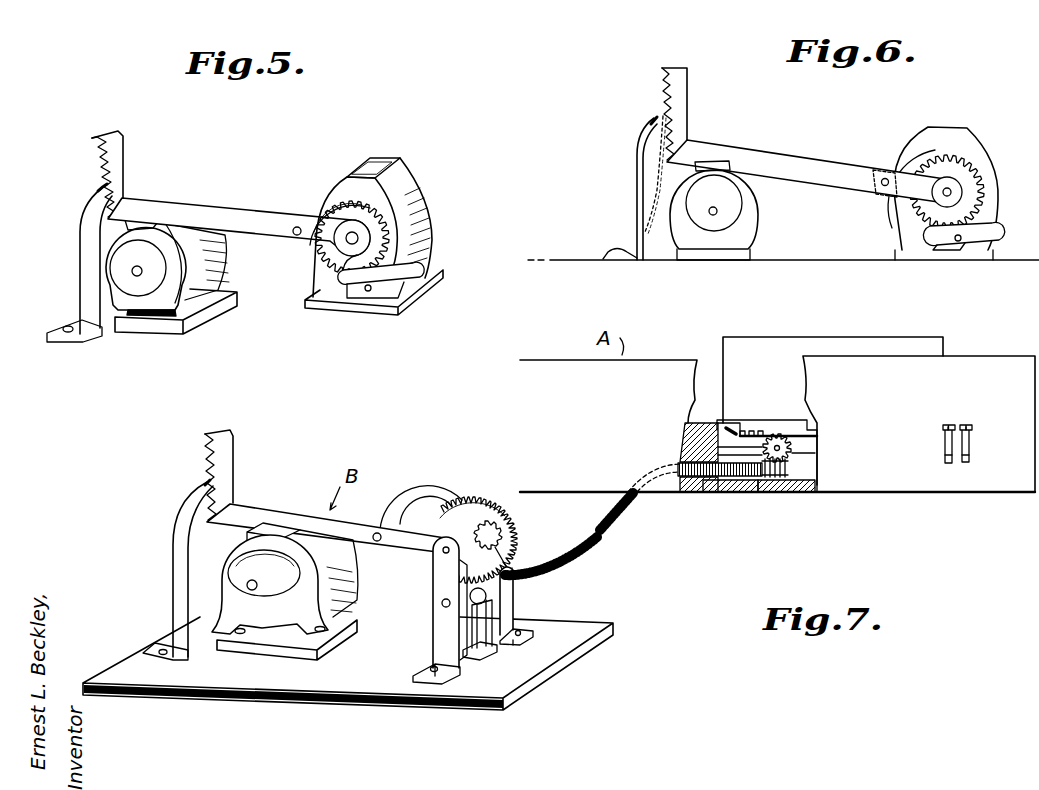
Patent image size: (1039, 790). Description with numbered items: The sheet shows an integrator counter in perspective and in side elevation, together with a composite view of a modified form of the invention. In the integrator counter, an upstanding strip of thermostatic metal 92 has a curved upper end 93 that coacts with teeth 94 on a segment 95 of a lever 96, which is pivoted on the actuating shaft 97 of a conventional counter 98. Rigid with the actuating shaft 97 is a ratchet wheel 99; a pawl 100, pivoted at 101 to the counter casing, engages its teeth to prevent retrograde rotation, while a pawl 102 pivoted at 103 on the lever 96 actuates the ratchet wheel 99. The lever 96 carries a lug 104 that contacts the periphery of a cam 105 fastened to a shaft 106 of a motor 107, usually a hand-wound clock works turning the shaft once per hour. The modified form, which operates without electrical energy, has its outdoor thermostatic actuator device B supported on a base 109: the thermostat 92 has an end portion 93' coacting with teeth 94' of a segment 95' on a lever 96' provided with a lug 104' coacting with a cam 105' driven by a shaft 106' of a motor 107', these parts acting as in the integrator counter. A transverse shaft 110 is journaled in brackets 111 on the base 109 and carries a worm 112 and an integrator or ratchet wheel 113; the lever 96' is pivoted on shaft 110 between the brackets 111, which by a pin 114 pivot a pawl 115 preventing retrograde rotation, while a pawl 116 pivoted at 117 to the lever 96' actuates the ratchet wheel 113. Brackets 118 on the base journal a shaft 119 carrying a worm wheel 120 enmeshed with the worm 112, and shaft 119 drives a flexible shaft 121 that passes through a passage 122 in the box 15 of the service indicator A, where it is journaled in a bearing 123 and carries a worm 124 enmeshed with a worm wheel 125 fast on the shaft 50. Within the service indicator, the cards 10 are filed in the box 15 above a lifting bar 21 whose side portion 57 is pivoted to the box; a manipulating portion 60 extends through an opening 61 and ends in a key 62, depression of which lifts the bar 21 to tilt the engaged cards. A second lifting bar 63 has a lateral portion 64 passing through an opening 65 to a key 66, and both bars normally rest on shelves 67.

In FIG. 5, the strip of thermostatic metal 92 is at (78, 257).
In FIG. 6, the strip of thermostatic metal 92 is at (635, 180).
In FIG. 7, the strip of thermostatic metal 92 is at (173, 538).
In FIG. 5, the curved upper end 93 is at (74, 188).
In FIG. 6, the curved upper end 93 is at (625, 118).
In FIG. 5, the teeth 94 is at (81, 177).
In FIG. 6, the teeth 94 is at (641, 114).
In FIG. 5, the segment 95 is at (129, 164).
In FIG. 6, the segment 95 is at (697, 104).
In FIG. 5, the lever 96 is at (239, 217).
In FIG. 6, the lever 96 is at (806, 164).
In FIG. 5, the actuating shaft 97 is at (348, 242).
In FIG. 6, the actuating shaft 97 is at (960, 190).
In FIG. 5, the counter 98 is at (396, 182).
In FIG. 6, the counter 98 is at (965, 140).
In FIG. 5, the ratchet wheel 99 is at (376, 245).
In FIG. 6, the ratchet wheel 99 is at (985, 208).
In FIG. 5, the pawl 100 is at (350, 284).
In FIG. 6, the pawl 100 is at (940, 246).
In FIG. 5, the pivot 101 is at (368, 292).
In FIG. 6, the pivot 101 is at (960, 243).
In FIG. 5, the pawl 102 is at (318, 210).
In FIG. 6, the pawl 102 is at (899, 160).
In FIG. 5, the pivot 103 is at (294, 235).
In FIG. 6, the pivot 103 is at (882, 186).
In FIG. 5, the lug 104 is at (159, 198).
In FIG. 6, the lug 104 is at (726, 144).
In FIG. 5, the cam 105 is at (98, 268).
In FIG. 6, the cam 105 is at (663, 203).
In FIG. 5, the shaft 106 is at (85, 290).
In FIG. 6, the shaft 106 is at (759, 205).
In FIG. 5, the motor 107 is at (171, 292).
In FIG. 6, the motor 107 is at (737, 215).
In FIG. 7, the cards 10 is at (903, 335).
In FIG. 7, the box 15 is at (980, 363).
In FIG. 7, the lifting bar 21 is at (738, 419).
In FIG. 7, the shaft 50 is at (792, 448).
In FIG. 7, the side portion 57 is at (772, 434).
In FIG. 7, the manipulating portion 60 is at (943, 435).
In FIG. 7, the opening 61 is at (942, 456).
In FIG. 7, the key 62 is at (948, 423).
In FIG. 7, the lifting bar 63 is at (748, 431).
In FIG. 7, the lateral portion 64 is at (973, 433).
In FIG. 7, the opening 65 is at (972, 456).
In FIG. 7, the key 66 is at (968, 424).
In FIG. 7, the shelves 67 is at (675, 456).
In FIG. 7, the flexible shaft 121 is at (628, 512).
In FIG. 7, the passage 122 is at (703, 492).
In FIG. 7, the bearing 123 is at (757, 492).
In FIG. 7, the worm 124 is at (800, 492).
In FIG. 7, the worm wheel 125 is at (790, 470).
In FIG. 7, the base 109 is at (348, 663).
In FIG. 7, the end portion 93' is at (176, 475).
In FIG. 7, the teeth 94' is at (247, 469).
In FIG. 7, the segment 95' is at (247, 466).
In FIG. 7, the lever 96' is at (326, 516).
In FIG. 7, the lug 104' is at (206, 549).
In FIG. 7, the cam 105' is at (207, 577).
In FIG. 7, the shaft 106' is at (185, 607).
In FIG. 7, the motor 107' is at (280, 609).
In FIG. 7, the transverse shaft 110 is at (432, 570).
In FIG. 7, the brackets 111 is at (435, 650).
In FIG. 7, the worm 112 is at (500, 523).
In FIG. 7, the ratchet wheel 113 is at (467, 505).
In FIG. 7, the pin 114 is at (440, 607).
In FIG. 7, the pawl 115 is at (513, 606).
In FIG. 7, the pawl 116 is at (407, 513).
In FIG. 7, the pivot 117 is at (377, 542).
In FIG. 7, the brackets 118 is at (507, 632).
In FIG. 7, the shaft 119 is at (530, 567).
In FIG. 7, the worm wheel 120 is at (515, 582).